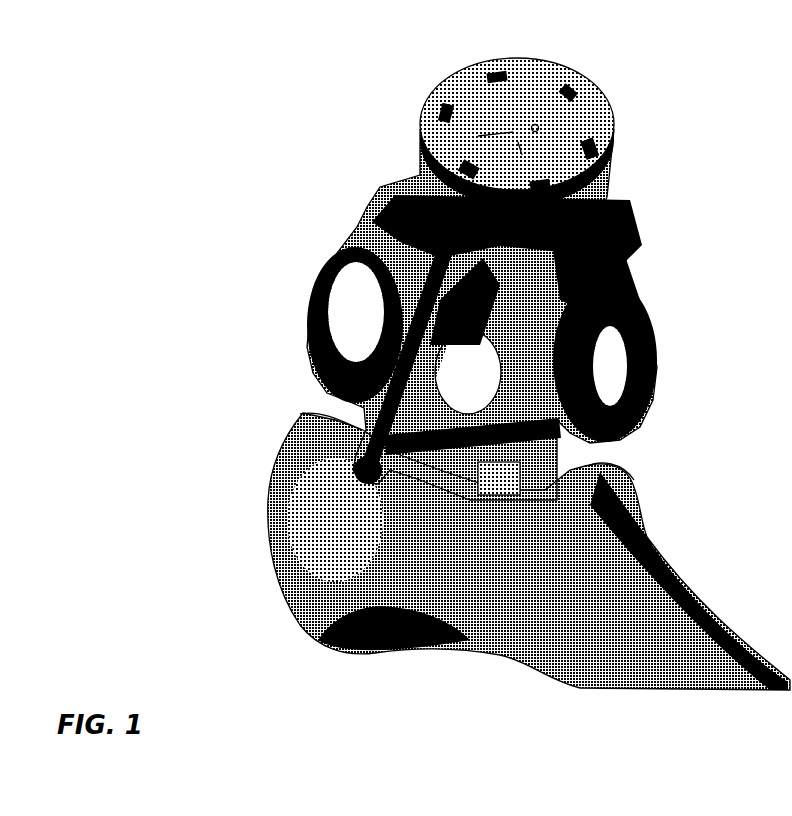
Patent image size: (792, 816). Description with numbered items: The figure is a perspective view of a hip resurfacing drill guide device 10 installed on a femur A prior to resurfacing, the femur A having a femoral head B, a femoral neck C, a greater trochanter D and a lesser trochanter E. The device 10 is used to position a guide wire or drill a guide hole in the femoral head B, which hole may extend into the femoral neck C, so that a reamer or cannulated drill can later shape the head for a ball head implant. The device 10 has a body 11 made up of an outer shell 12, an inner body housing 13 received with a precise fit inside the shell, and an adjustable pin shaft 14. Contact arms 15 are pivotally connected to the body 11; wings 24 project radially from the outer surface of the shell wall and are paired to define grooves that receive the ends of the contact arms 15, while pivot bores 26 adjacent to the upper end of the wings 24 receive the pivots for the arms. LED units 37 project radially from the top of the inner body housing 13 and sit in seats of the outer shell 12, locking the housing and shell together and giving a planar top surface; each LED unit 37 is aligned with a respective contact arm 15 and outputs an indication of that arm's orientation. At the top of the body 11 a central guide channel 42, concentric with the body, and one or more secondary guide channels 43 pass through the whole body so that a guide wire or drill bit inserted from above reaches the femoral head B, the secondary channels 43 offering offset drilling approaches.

The hip resurfacing drill guide device 10 is at (252, 160).
The body 11 is at (380, 165).
The outer shell 12 is at (608, 200).
The inner body housing 13 is at (560, 128).
The adjustable pin shaft 14 is at (537, 110).
The contact arms 15 is at (328, 272).
The wings 24 is at (385, 197).
The pivot bores 26 is at (582, 262).
The LED units 37 is at (436, 108).
The central guide channel 42 is at (520, 133).
The secondary guide channel 43 is at (520, 130).
The femur A is at (703, 578).
The femoral head B is at (375, 333).
The femoral neck C is at (335, 420).
The greater trochanter D is at (263, 576).
The lesser trochanter E is at (630, 482).